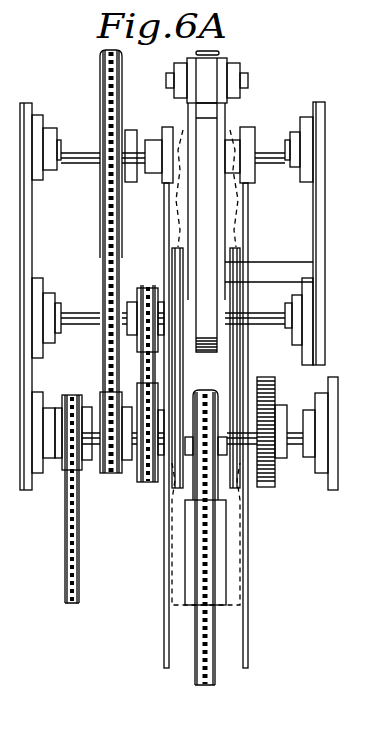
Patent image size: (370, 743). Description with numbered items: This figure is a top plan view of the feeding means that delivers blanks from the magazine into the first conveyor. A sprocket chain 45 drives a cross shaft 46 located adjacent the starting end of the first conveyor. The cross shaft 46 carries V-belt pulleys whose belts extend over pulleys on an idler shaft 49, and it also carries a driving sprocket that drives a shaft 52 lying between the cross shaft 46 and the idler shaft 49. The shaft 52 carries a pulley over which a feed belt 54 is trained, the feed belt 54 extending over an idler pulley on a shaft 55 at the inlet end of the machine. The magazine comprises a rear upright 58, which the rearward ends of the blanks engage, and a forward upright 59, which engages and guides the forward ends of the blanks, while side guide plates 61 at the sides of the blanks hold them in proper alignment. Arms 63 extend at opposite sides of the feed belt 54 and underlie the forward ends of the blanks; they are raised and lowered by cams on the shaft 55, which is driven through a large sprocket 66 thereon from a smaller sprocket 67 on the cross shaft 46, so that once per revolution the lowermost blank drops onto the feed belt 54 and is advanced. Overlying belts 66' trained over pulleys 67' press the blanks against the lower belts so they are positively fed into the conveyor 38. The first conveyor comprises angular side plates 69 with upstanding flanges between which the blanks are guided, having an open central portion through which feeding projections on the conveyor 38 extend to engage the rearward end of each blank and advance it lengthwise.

The conveyor 38 is at (186, 684).
The sprocket chain 45 is at (65, 553).
The cross shaft 46 is at (294, 430).
The idler shaft 49 is at (270, 281).
The shaft 52 is at (258, 325).
The feed belt 54 is at (208, 305).
The shaft 55 is at (276, 153).
The rear upright 58 is at (215, 52).
The forward upright 59 is at (200, 246).
The side guide plates 61 is at (164, 217).
The arms 63 is at (190, 219).
The large sprocket 66 is at (91, 261).
The belts 66' is at (186, 383).
The smaller sprocket 67 is at (109, 446).
The pulleys 67' is at (256, 505).
The angular side plates 69 is at (164, 627).